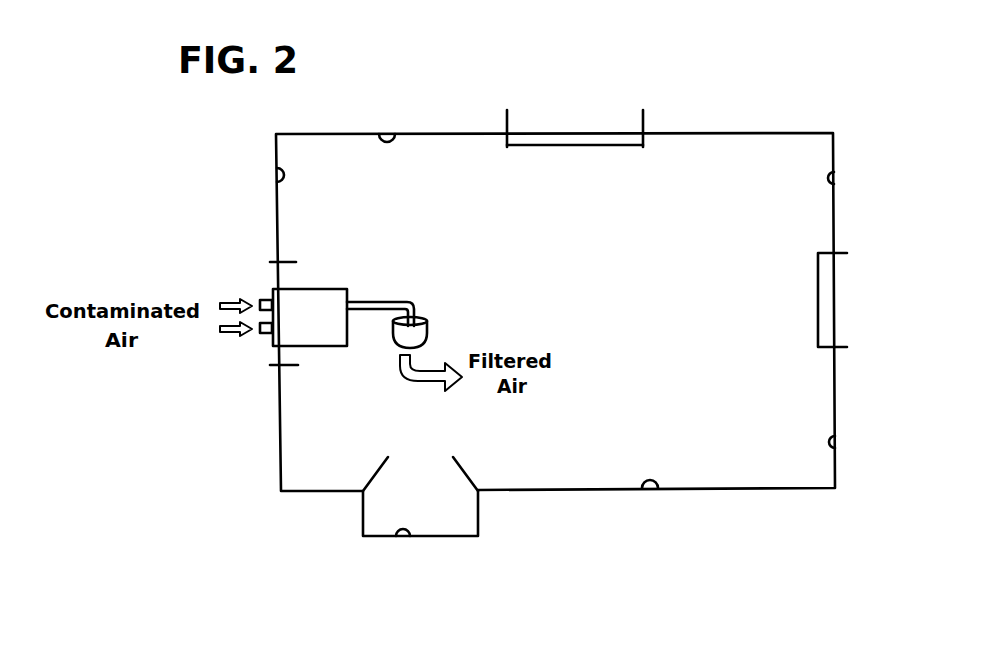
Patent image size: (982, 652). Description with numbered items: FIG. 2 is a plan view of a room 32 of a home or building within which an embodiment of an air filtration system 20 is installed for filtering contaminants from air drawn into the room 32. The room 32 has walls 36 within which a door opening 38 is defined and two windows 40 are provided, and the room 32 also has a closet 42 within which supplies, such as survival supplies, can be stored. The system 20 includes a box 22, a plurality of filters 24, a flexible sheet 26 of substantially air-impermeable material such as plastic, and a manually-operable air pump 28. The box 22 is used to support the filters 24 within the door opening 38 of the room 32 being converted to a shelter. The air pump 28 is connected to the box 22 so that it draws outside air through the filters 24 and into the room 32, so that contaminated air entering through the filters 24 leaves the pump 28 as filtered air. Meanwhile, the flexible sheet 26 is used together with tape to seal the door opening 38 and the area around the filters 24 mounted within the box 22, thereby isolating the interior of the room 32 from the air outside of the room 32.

The air filtration system 20 is at (184, 204).
The box 22 is at (334, 289).
The filters 24 is at (262, 298).
The flexible sheet 26 is at (281, 268).
The air pump 28 is at (428, 325).
The room 32 is at (838, 175).
The walls 36 is at (275, 170).
The door opening 38 is at (272, 353).
The windows 40 is at (609, 131).
The closet 42 is at (407, 538).